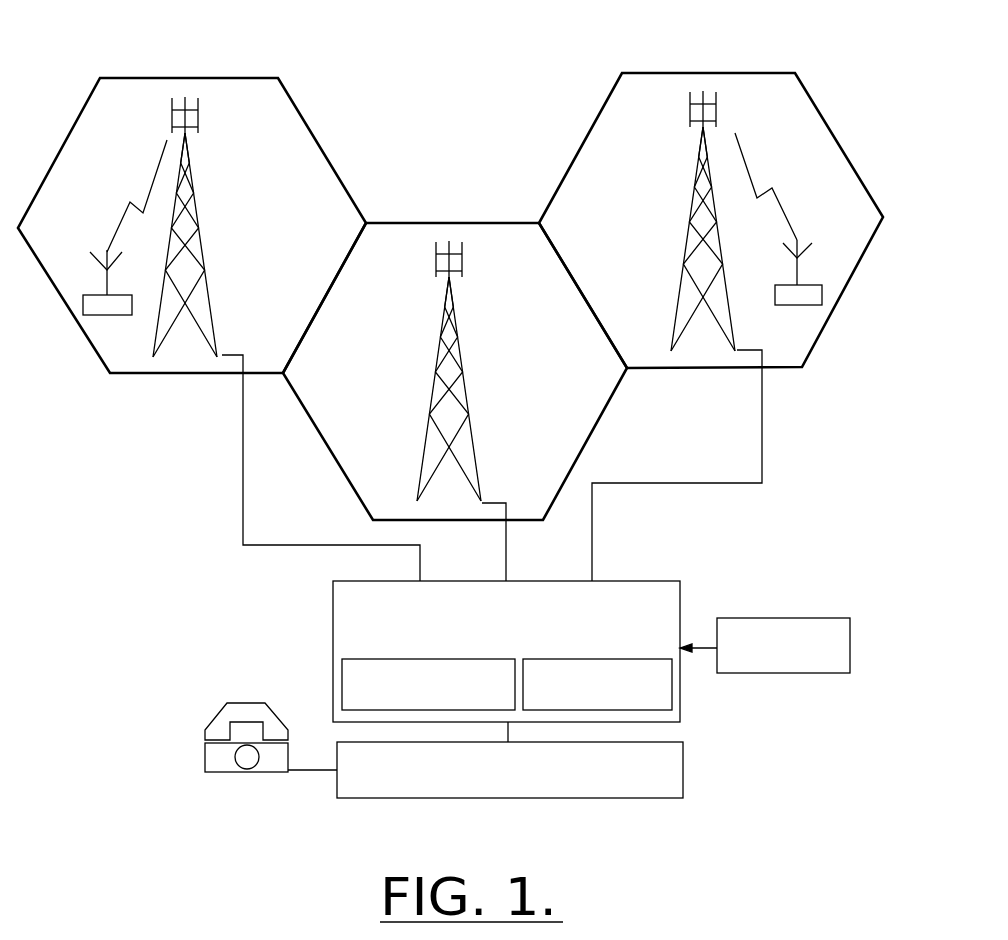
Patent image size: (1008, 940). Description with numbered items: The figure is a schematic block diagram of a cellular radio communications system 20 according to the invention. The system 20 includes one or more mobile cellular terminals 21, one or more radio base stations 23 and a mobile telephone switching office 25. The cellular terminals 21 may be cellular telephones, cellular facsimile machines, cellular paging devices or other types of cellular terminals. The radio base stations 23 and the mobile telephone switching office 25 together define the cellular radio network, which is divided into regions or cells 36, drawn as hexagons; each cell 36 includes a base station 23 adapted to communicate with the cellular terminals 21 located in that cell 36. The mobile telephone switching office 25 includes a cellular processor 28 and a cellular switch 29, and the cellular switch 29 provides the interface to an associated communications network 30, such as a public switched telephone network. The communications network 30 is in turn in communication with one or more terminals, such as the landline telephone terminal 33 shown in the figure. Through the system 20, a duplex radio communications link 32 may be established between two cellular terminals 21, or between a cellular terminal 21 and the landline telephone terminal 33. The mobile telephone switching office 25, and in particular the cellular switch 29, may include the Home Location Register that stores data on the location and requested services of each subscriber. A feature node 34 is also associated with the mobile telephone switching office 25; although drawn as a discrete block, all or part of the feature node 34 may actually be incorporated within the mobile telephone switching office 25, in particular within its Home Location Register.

The cellular radio communications system 20 is at (813, 57).
The mobile cellular terminal 21 is at (105, 303).
The radio base station 23 is at (222, 240).
The mobile telephone switching office 25 is at (642, 577).
The cellular processor 28 is at (408, 659).
The cellular switch 29 is at (570, 659).
The communications network 30 is at (423, 802).
The duplex radio communications link 32 is at (857, 107).
The landline telephone terminal 33 is at (205, 762).
The feature node 34 is at (792, 616).
The cell 36 is at (310, 131).